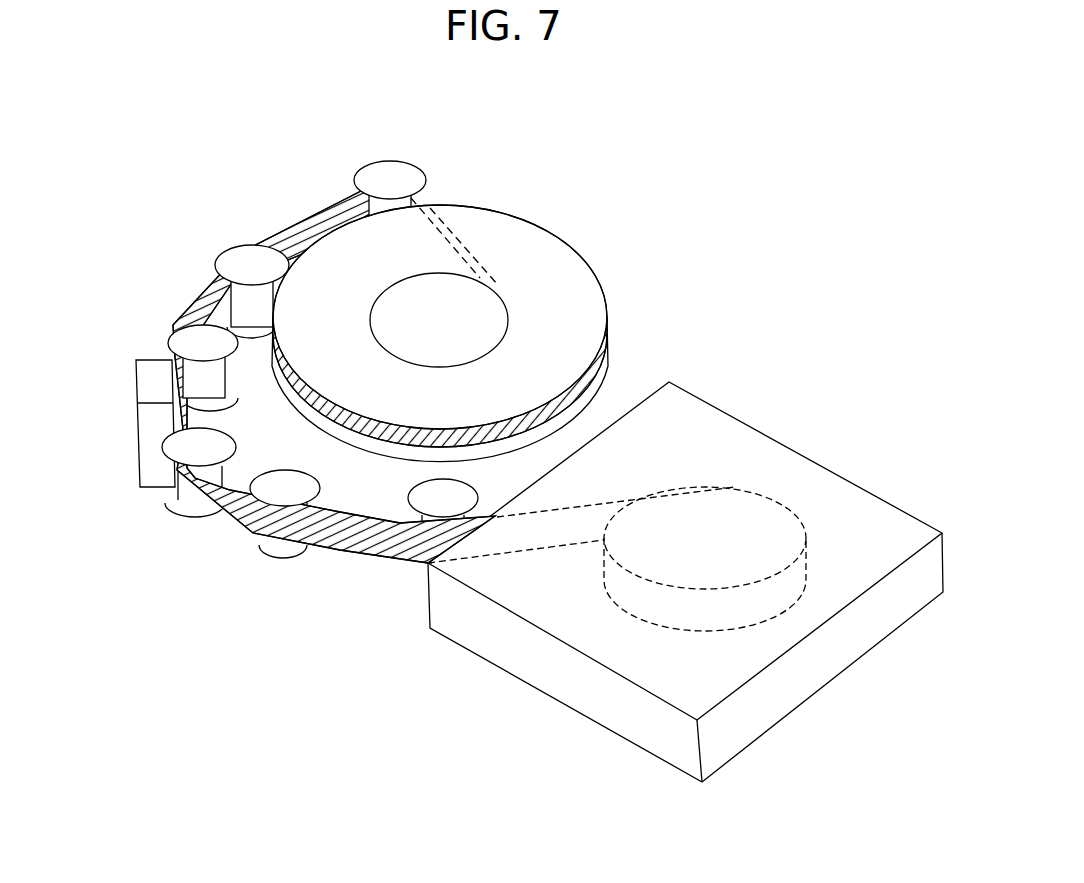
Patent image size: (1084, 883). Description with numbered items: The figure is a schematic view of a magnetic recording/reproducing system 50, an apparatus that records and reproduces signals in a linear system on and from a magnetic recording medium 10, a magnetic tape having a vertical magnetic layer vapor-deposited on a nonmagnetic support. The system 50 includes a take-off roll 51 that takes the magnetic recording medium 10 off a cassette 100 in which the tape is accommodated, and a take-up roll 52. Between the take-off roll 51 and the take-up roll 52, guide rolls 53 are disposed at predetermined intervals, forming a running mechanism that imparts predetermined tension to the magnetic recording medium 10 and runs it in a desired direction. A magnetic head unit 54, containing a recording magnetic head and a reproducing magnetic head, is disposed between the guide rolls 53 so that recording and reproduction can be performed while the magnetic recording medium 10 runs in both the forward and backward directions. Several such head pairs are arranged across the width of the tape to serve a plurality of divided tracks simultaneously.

The magnetic recording medium 10 is at (366, 537).
The magnetic recording/reproducing system 50 is at (708, 325).
The take-off roll 51 is at (698, 510).
The take-up roll 52 is at (473, 318).
The guide rolls 53 is at (388, 177).
The magnetic head unit 54 is at (150, 432).
The cassette 100 is at (838, 507).